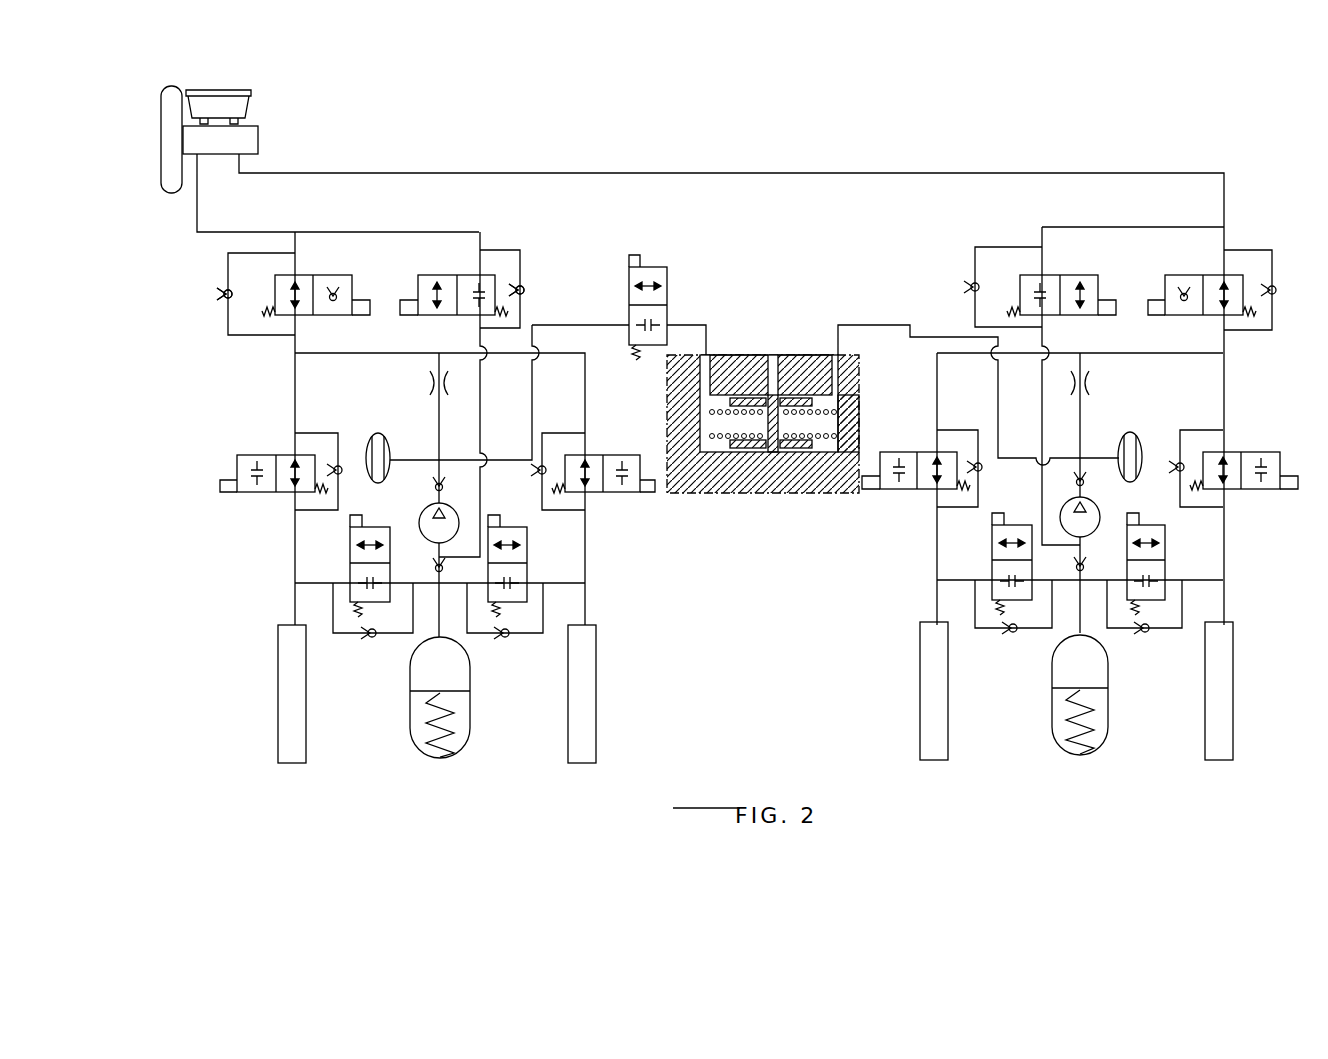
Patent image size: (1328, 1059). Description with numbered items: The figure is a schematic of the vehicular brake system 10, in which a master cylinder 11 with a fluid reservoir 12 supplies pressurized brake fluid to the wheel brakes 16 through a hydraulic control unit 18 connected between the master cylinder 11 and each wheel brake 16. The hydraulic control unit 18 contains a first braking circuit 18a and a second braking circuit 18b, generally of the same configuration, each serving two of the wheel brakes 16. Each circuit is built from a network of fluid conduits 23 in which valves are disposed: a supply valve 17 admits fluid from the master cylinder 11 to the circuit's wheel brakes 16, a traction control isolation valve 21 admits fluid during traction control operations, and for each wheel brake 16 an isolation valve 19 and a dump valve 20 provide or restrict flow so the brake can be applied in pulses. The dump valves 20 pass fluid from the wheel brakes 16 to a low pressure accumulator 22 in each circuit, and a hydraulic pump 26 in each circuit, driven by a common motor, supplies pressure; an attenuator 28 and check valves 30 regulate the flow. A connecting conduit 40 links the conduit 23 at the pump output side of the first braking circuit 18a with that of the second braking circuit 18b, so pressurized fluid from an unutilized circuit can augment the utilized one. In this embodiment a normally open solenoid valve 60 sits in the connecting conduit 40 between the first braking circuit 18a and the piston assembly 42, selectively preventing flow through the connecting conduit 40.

The vehicular brake system 10 is at (248, 78).
The master cylinder 11 is at (192, 142).
The fluid reservoir 12 is at (240, 108).
The wheel brake 16 is at (290, 694).
The supply valve 17 is at (466, 275).
The hydraulic control unit 18 is at (246, 399).
The first braking circuit 18a is at (366, 757).
The second braking circuit 18b is at (1012, 750).
The isolation valve 19 is at (246, 492).
The dump valve 20 is at (352, 568).
The traction control isolation valve 21 is at (280, 290).
The low pressure accumulator 22 is at (458, 728).
The fluid conduit 23 is at (293, 558).
The hydraulic pump 26 is at (448, 522).
The attenuator 28 is at (380, 432).
The check valve 30 is at (225, 287).
The connecting conduit 40 is at (585, 322).
The piston assembly 42 is at (780, 335).
The valve 60 is at (666, 310).